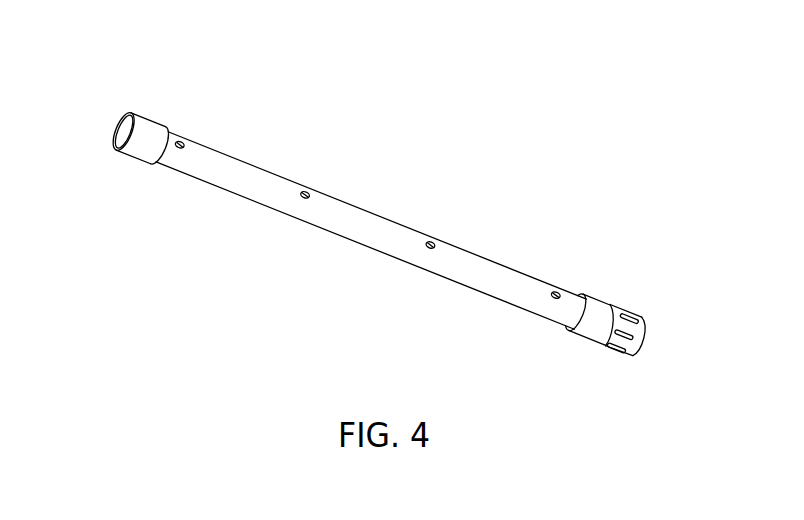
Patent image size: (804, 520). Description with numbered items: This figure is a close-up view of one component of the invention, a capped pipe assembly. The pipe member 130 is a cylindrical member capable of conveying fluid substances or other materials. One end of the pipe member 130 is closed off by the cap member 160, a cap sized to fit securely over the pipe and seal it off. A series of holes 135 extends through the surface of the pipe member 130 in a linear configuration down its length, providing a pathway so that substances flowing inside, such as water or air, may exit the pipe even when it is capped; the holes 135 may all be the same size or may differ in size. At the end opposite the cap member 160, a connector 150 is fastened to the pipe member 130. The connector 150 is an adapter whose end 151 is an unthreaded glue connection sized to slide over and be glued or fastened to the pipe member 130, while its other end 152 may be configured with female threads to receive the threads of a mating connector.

The pipe member 130 is at (376, 211).
The holes 135 is at (430, 250).
The connector 150 is at (605, 290).
The end 151 is at (580, 328).
The end 152 is at (632, 348).
The cap member 160 is at (150, 115).